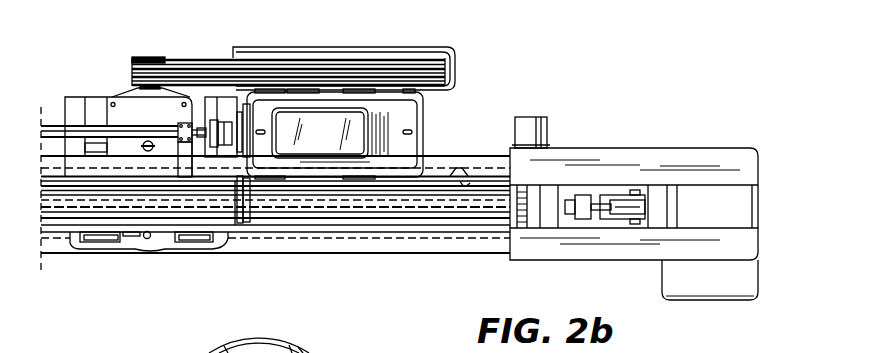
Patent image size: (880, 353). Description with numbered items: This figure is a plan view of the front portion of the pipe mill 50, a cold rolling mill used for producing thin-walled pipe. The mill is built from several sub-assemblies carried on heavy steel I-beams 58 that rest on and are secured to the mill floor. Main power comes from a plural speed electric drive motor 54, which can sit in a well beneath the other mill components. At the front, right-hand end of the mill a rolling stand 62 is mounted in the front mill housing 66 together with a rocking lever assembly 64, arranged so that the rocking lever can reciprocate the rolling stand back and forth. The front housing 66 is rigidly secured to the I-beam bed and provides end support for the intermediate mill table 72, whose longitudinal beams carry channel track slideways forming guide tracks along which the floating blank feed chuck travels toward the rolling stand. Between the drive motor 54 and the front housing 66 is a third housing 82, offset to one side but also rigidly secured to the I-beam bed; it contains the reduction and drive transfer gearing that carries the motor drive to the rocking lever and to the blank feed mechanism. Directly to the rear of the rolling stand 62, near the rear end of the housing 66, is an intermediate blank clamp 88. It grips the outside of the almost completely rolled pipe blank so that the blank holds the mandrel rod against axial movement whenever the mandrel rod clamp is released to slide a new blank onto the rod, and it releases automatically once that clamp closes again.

The pipe mill 50 is at (155, 270).
The electric drive motor 54 is at (112, 95).
The I-beams 58 is at (368, 254).
The rolling stand 62 is at (659, 180).
The rocking lever assembly 64 is at (591, 178).
The front mill housing 66 is at (608, 252).
The mill table 72 is at (470, 183).
The third housing 82 is at (408, 116).
The intermediate blank clamp 88 is at (533, 178).